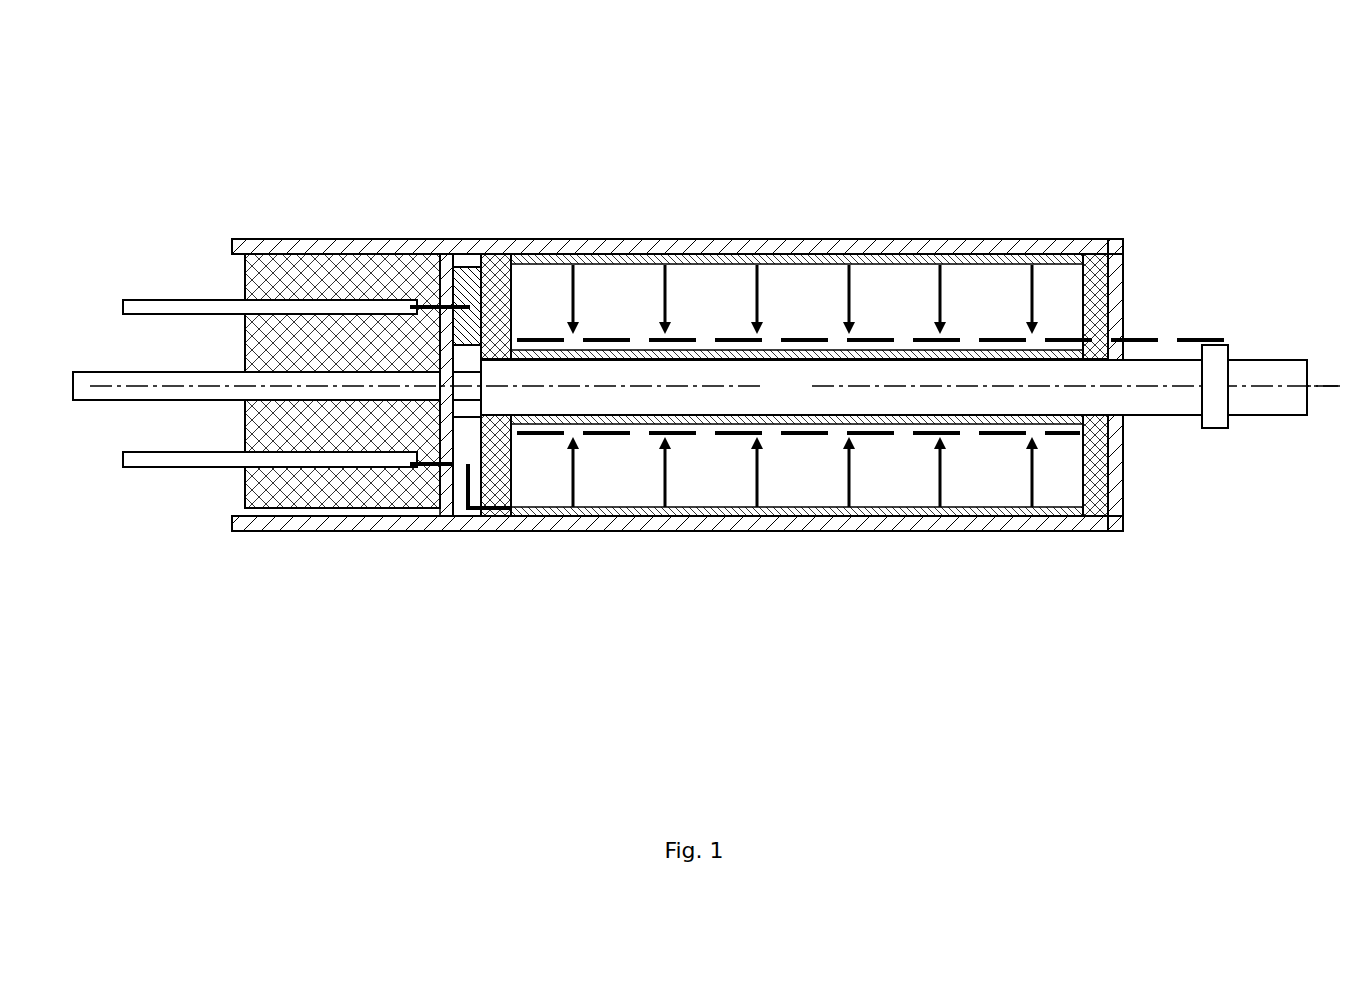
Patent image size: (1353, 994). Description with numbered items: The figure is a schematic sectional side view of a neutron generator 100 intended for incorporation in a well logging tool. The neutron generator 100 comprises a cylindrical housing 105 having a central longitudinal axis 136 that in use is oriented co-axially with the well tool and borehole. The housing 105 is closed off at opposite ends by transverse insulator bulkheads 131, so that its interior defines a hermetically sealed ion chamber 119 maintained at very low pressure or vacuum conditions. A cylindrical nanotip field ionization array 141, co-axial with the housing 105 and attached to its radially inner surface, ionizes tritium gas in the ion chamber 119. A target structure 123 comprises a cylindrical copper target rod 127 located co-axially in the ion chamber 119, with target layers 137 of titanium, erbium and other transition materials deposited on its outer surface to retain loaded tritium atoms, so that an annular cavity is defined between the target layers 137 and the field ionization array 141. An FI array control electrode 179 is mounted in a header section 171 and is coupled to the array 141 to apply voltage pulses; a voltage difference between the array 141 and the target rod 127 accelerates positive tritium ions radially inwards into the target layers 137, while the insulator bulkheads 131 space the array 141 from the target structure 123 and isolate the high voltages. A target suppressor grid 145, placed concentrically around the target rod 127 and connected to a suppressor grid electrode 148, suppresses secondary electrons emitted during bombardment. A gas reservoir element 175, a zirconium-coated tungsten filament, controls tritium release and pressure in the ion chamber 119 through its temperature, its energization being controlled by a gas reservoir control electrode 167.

The neutron generator 100 is at (706, 383).
The cylindrical housing 105 is at (985, 243).
The ion chamber 119 is at (867, 434).
The target structure 123 is at (643, 338).
The target rod 127 is at (768, 398).
The insulator bulkheads 131 is at (497, 265).
The central longitudinal axis 136 is at (1240, 383).
The target layers 137 is at (710, 355).
The nanotip field ionization array 141 is at (808, 258).
The target suppressor grid 145 is at (798, 508).
The suppressor grid electrode 148 is at (1217, 418).
The gas reservoir control electrode 167 is at (197, 302).
The header section 171 is at (350, 270).
The gas reservoir element 175 is at (465, 280).
The FI array control electrode 179 is at (200, 463).